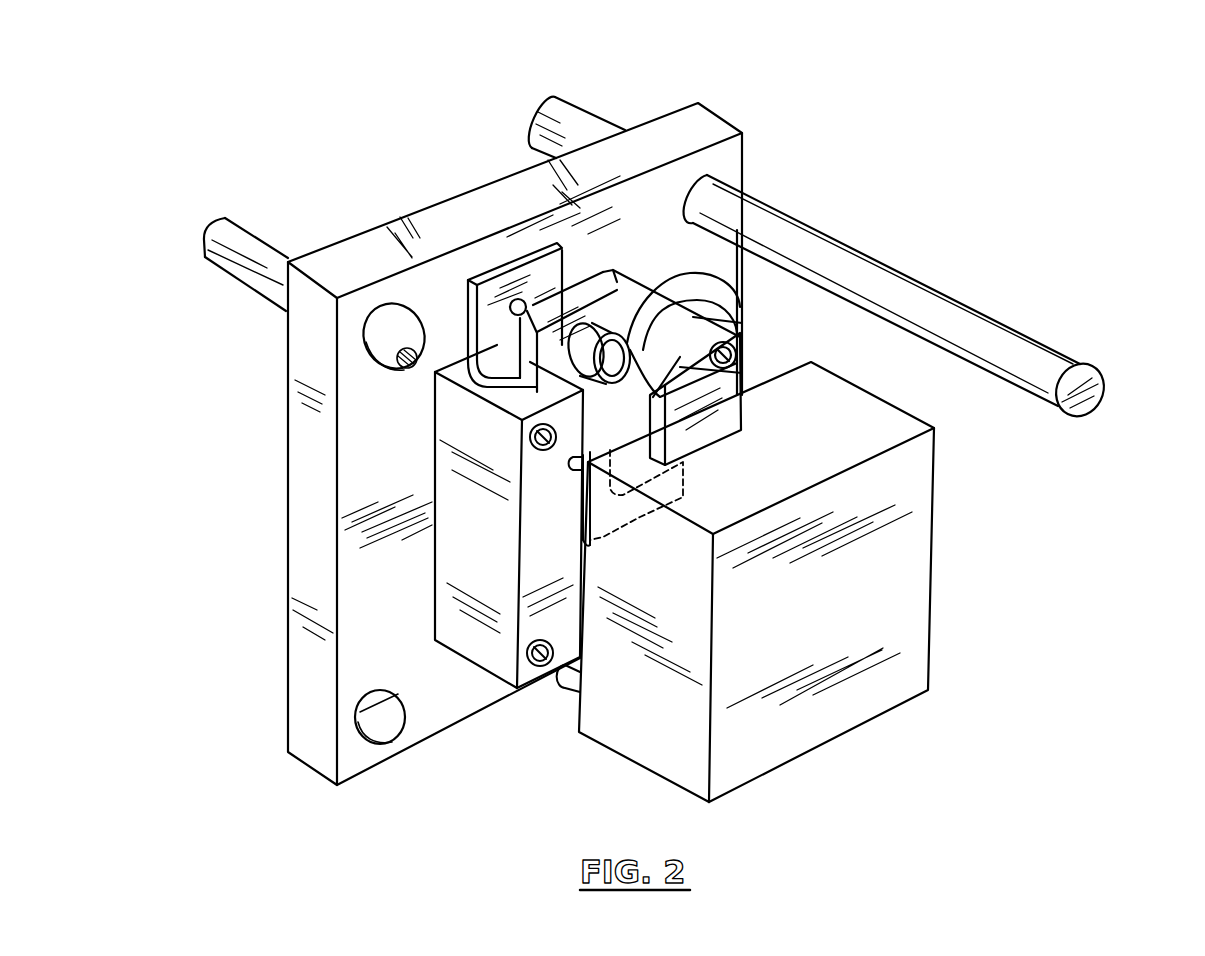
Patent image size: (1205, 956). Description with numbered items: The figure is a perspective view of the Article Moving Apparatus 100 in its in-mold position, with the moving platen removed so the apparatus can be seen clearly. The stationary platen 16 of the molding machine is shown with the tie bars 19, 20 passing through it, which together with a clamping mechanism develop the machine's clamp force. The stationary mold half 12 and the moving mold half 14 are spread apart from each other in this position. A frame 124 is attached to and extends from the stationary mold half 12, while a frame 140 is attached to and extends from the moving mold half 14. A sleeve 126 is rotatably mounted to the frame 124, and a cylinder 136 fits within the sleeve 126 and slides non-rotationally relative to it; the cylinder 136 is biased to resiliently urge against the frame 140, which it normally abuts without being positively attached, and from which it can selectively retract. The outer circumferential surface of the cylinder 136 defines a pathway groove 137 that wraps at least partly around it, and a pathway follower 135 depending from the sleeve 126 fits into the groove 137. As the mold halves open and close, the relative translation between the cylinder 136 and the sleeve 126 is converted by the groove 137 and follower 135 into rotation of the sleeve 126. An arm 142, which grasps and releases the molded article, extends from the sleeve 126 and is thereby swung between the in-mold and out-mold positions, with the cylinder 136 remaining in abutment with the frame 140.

The Article Moving Apparatus 100 is at (1072, 217).
The stationary platen 16 is at (672, 132).
The tie bar 20 is at (247, 267).
The tie bar 19 is at (1033, 362).
The stationary mold half 12 is at (497, 655).
The moving mold half 14 is at (832, 712).
The frame 124 is at (518, 265).
The sleeve 126 is at (640, 288).
The pathway follower 135 is at (603, 272).
The cylinder 136 is at (745, 320).
The pathway groove 137 is at (700, 300).
The frame 140 is at (713, 427).
The arm 142 is at (593, 432).